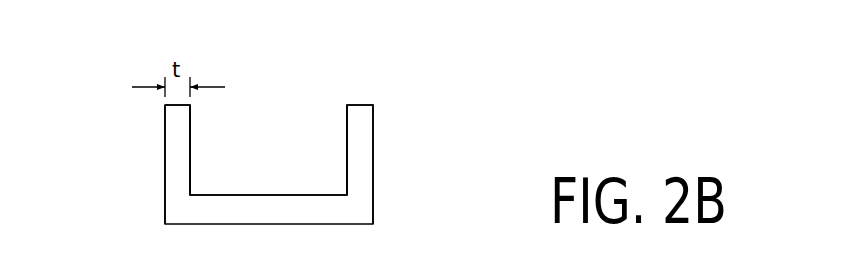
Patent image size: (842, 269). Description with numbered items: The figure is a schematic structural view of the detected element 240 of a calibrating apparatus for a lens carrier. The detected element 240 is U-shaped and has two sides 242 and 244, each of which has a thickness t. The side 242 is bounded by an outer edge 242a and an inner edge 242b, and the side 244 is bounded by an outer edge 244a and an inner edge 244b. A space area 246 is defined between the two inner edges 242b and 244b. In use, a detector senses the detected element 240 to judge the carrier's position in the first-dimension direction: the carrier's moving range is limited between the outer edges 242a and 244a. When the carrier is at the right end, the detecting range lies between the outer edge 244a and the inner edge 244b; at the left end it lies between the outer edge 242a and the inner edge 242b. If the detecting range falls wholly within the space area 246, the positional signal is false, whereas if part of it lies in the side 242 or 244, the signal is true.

The detected element 240 is at (503, 224).
The side 242 is at (172, 137).
The outer edge 242a is at (162, 170).
The inner edge 242b is at (196, 150).
The side 244 is at (363, 124).
The outer edge 244a is at (376, 158).
The inner edge 244b is at (342, 125).
The space area 246 is at (266, 157).